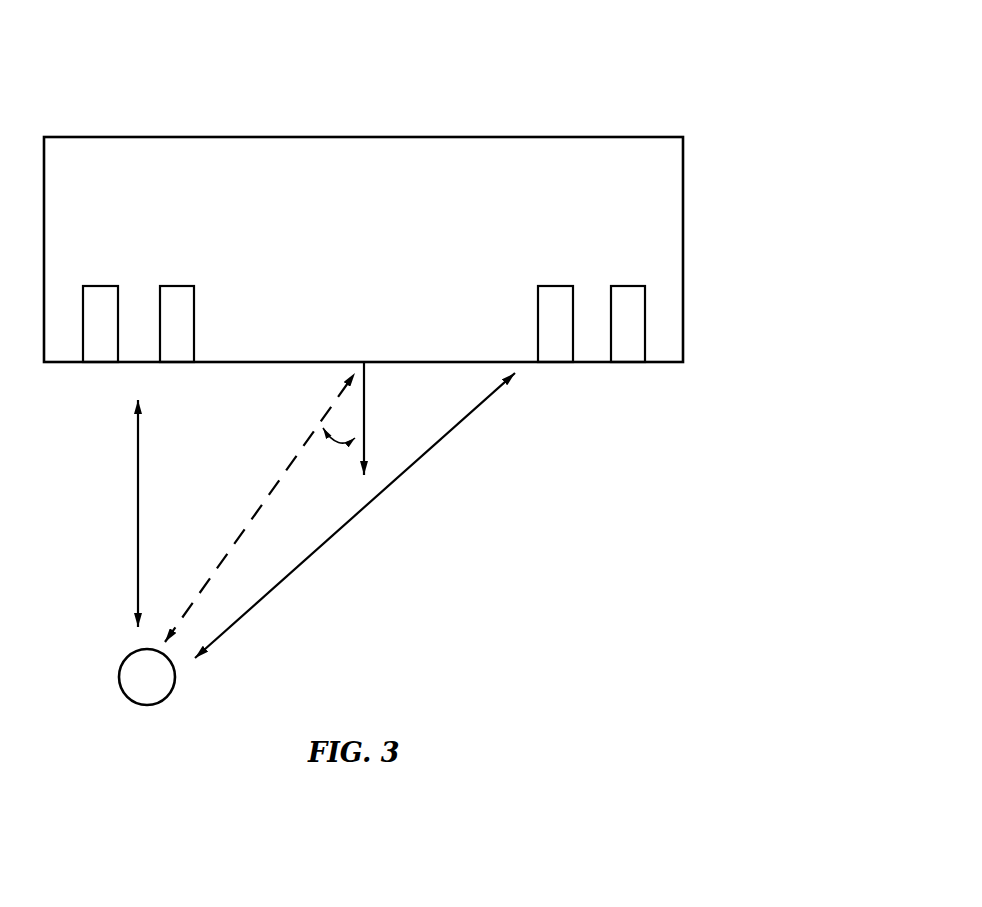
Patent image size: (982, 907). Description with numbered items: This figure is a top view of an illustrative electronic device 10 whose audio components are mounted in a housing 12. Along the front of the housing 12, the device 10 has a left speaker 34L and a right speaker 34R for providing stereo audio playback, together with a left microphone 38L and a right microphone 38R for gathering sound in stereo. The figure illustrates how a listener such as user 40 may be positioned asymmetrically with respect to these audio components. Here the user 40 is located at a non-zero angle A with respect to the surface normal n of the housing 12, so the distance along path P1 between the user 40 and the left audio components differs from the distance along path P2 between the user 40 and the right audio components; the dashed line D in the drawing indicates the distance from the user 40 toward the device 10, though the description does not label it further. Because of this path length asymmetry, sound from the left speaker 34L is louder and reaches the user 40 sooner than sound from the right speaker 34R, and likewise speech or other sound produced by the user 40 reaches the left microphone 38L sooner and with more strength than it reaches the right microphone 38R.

The electronic device 10 is at (611, 81).
The housing 12 is at (683, 253).
The left speaker 34L is at (98, 295).
The left microphone 38L is at (178, 294).
The right speaker 34R is at (553, 294).
The right microphone 38R is at (628, 293).
The user 40 is at (165, 690).
The path P1 is at (123, 513).
The path P2 is at (355, 515).
The distance D is at (260, 507).
The angle A is at (339, 449).
The surface normal n is at (378, 418).